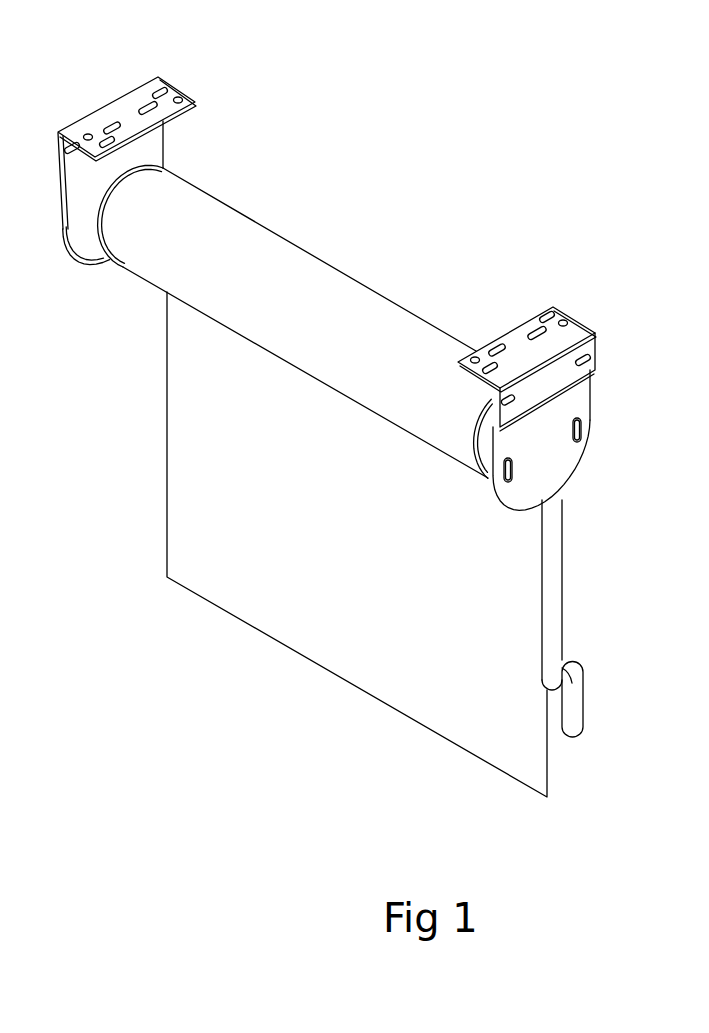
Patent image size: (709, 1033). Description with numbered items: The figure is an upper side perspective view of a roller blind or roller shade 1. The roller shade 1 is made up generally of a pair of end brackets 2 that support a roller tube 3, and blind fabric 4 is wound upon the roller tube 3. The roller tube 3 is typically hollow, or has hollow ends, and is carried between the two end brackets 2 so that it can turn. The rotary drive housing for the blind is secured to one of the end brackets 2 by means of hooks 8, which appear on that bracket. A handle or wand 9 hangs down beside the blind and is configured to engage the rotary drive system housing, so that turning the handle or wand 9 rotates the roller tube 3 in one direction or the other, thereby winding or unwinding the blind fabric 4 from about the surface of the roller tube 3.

The roller blind 1 is at (428, 183).
The end brackets 2 is at (180, 87).
The roller tube 3 is at (408, 328).
The blind fabric 4 is at (323, 630).
The hooks 8 is at (580, 443).
The handle or wand 9 is at (553, 609).